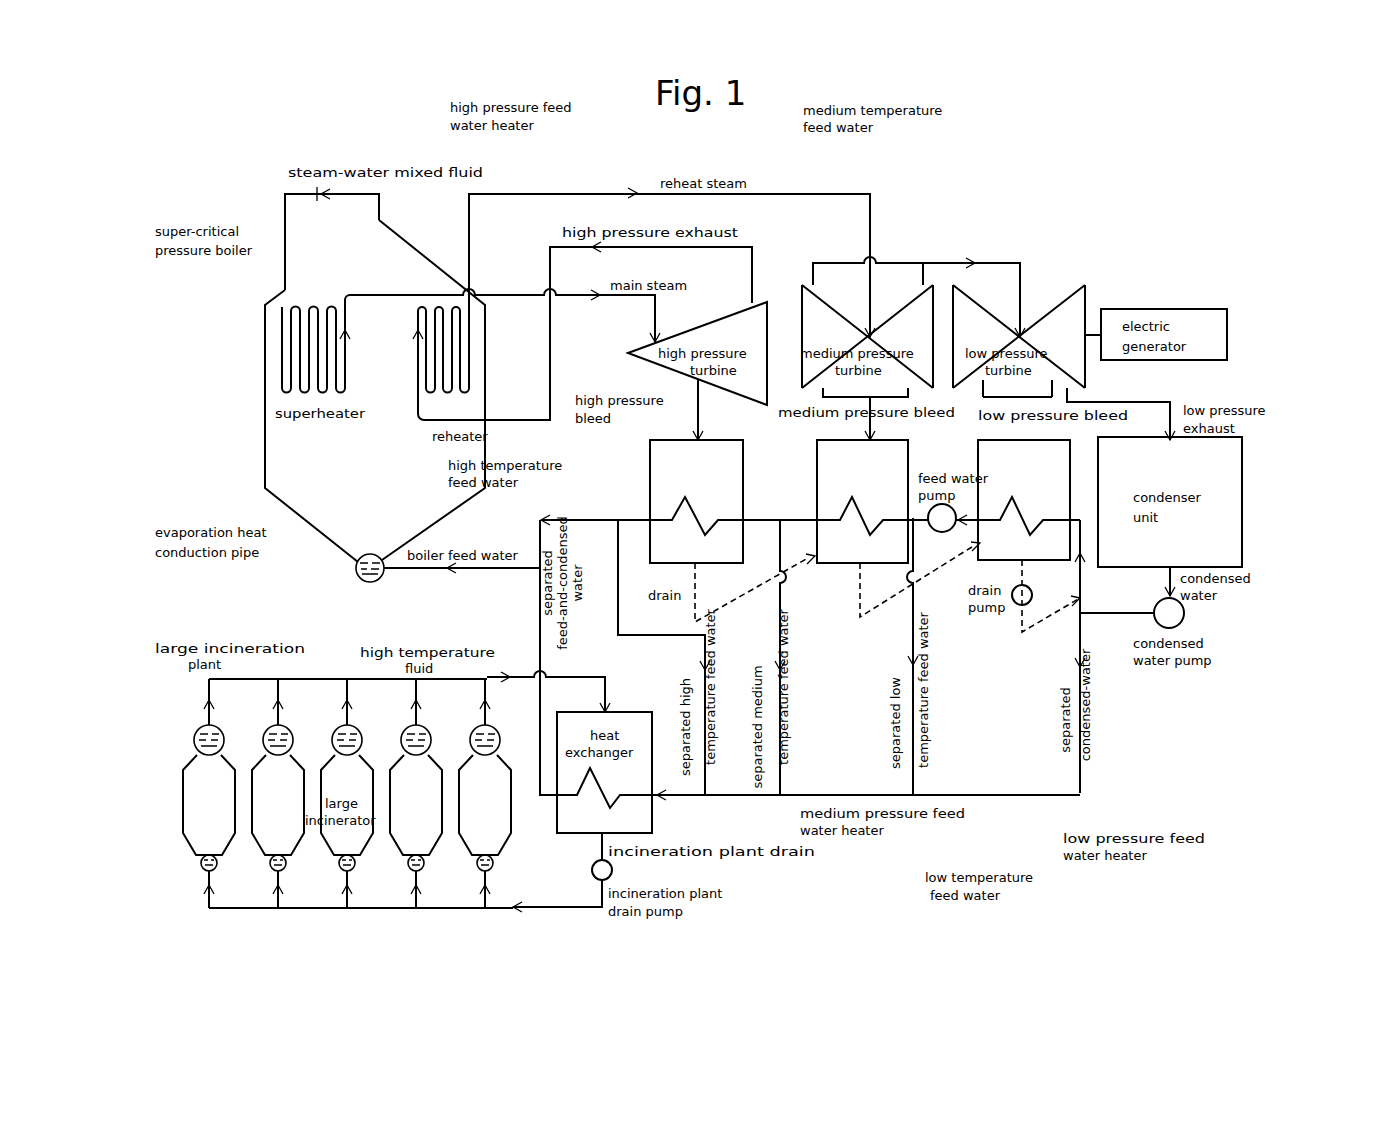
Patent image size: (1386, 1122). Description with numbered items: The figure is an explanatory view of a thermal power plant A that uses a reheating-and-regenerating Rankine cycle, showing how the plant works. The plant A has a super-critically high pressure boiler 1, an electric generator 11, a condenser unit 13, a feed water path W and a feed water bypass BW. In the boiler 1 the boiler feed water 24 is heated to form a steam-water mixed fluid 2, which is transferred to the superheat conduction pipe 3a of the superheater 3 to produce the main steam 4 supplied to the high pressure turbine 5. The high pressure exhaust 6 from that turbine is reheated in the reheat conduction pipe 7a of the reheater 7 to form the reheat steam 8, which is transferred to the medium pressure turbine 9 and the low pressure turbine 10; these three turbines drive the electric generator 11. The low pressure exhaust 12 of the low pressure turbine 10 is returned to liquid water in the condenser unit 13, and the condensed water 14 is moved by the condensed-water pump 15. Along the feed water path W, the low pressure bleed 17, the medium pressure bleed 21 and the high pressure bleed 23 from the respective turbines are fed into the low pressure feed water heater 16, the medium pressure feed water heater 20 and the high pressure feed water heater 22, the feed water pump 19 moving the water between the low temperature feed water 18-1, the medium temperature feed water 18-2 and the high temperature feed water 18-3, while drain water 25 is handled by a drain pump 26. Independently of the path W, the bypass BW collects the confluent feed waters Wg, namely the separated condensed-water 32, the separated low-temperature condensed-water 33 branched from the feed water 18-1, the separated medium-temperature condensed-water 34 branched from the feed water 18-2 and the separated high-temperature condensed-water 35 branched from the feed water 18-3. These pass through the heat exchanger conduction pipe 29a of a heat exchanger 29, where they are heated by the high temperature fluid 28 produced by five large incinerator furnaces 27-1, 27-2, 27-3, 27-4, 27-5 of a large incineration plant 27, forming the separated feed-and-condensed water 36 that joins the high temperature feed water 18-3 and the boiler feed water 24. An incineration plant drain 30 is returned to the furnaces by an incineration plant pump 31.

The super-critically high pressure boiler 1 is at (265, 490).
The steam-water mixed fluid 2 is at (352, 196).
The superheater 3 is at (280, 392).
The superheat conduction pipe 3a is at (282, 325).
The main steam 4 is at (577, 298).
The high pressure turbine 5 is at (735, 312).
The high pressure exhaust 6 is at (615, 250).
The reheater 7 is at (424, 424).
The reheat conduction pipe 7a is at (470, 355).
The reheat steam 8 is at (578, 193).
The medium pressure turbine 9 is at (915, 300).
The low pressure turbine 10 is at (1052, 305).
The electric generator 11 is at (1182, 308).
The low pressure exhaust 12 is at (1175, 402).
The condenser unit 13 is at (1242, 478).
The condensed water 14 is at (1165, 575).
The condensed-water pump 15 is at (1185, 612).
The low pressure feed water heater 16 is at (1080, 795).
The low pressure bleed 17 is at (1070, 402).
The low temperature feed water 18-1 is at (962, 525).
The medium temperature feed water 18-2 is at (753, 520).
The high temperature feed water 18-3 is at (600, 520).
The feed water pump 19 is at (937, 533).
The medium pressure feed water heater 20 is at (837, 543).
The medium pressure bleed 21 is at (878, 424).
The high pressure feed water heater 22 is at (663, 467).
The high pressure bleed 23 is at (700, 407).
The boiler feed water 24 is at (470, 570).
The drain water 25 is at (1022, 640).
The drain pump 26 is at (1018, 607).
The large incineration plant 27 is at (264, 629).
The large incinerator furnace 27-1 is at (182, 835).
The large incinerator furnace 27-2 is at (257, 857).
The large incinerator furnace 27-3 is at (325, 857).
The large incinerator furnace 27-4 is at (395, 857).
The large incinerator furnace 27-5 is at (463, 857).
The high temperature fluid 28 is at (492, 677).
The heat exchanger 29 is at (640, 722).
The heat exchanger conduction pipe 29a is at (600, 793).
The incineration plant drain 30 is at (607, 858).
The incineration plant pump 31 is at (598, 880).
The separated condensed-water 32 is at (1087, 630).
The separated low-temperature condensed-water 33 is at (910, 683).
The separated medium-temperature condensed-water 34 is at (778, 622).
The separated high-temperature condensed-water 35 is at (703, 638).
The separated feed-and-condensed water 36 is at (540, 603).
The thermal power plant A is at (999, 190).
The feed water path W is at (1062, 576).
The confluent feed waters Wg is at (668, 797).
The feed water bypass BW is at (1015, 802).